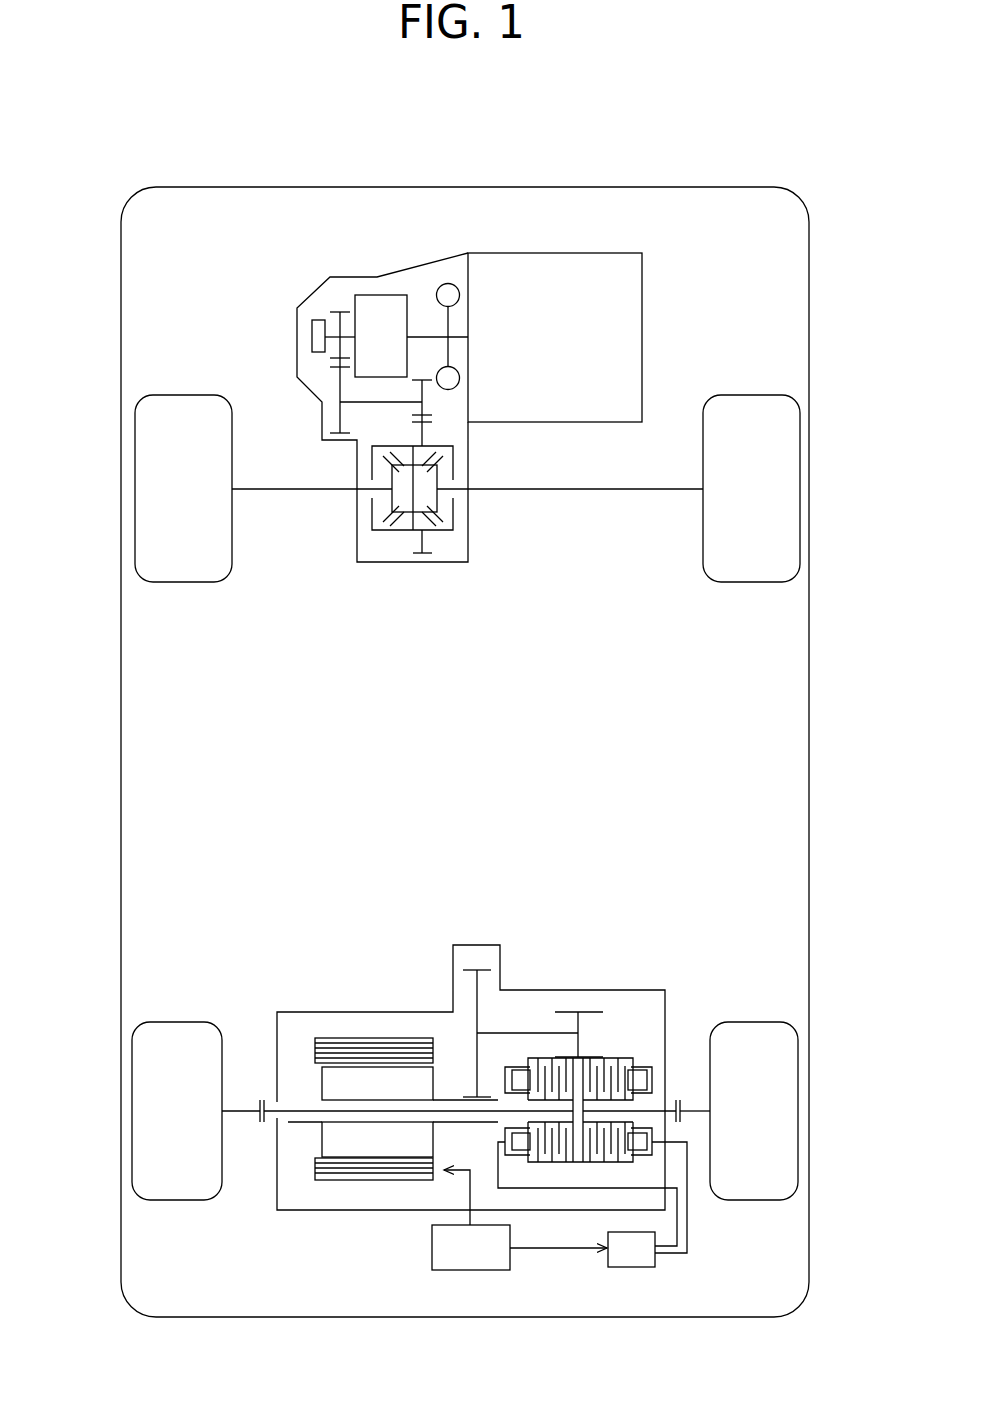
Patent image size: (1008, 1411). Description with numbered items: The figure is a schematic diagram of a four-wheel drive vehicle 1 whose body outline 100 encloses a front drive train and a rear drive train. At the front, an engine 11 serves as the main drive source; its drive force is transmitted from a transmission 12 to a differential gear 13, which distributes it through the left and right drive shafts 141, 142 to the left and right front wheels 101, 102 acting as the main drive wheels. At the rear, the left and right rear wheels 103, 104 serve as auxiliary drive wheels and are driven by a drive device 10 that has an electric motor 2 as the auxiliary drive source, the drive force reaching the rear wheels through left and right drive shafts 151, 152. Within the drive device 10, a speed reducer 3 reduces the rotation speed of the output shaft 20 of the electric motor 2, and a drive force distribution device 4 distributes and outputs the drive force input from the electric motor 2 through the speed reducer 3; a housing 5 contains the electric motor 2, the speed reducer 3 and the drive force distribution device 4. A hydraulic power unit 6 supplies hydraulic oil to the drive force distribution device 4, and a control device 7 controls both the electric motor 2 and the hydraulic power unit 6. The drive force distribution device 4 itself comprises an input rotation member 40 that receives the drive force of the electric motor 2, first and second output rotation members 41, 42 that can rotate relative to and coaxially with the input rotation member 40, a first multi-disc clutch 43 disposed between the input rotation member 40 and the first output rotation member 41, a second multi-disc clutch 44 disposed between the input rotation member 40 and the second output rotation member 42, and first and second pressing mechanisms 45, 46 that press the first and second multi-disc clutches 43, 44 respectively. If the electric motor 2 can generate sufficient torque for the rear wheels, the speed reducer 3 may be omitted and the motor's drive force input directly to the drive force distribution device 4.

The four-wheel drive vehicle 1 is at (814, 179).
The vehicle body 100 is at (673, 185).
The engine 11 is at (588, 252).
The transmission 12 is at (359, 285).
The differential gear 13 is at (381, 539).
The left front wheel 101 is at (135, 487).
The right front wheel 102 is at (800, 485).
The left rear wheel 103 is at (133, 1140).
The right rear wheel 104 is at (798, 1135).
The left drive shaft 141 is at (317, 487).
The right drive shaft 142 is at (573, 487).
The drive device 10 is at (362, 966).
The electric motor 2 is at (329, 1033).
The output shaft 20 is at (453, 1097).
The speed reducer 3 is at (518, 1018).
The drive force distribution device 4 is at (574, 1105).
The input rotation member 40 is at (608, 1062).
The first output rotation member 41 is at (297, 1110).
The second output rotation member 42 is at (653, 1110).
The first multi-disc clutch 43 is at (555, 1162).
The second multi-disc clutch 44 is at (602, 1162).
The first pressing mechanism 45 is at (497, 1133).
The second pressing mechanism 46 is at (659, 1059).
The housing 5 is at (355, 1213).
The hydraulic power unit 6 is at (628, 1267).
The control device 7 is at (453, 1270).
The left drive shaft 151 is at (248, 1115).
The right drive shaft 152 is at (693, 1113).